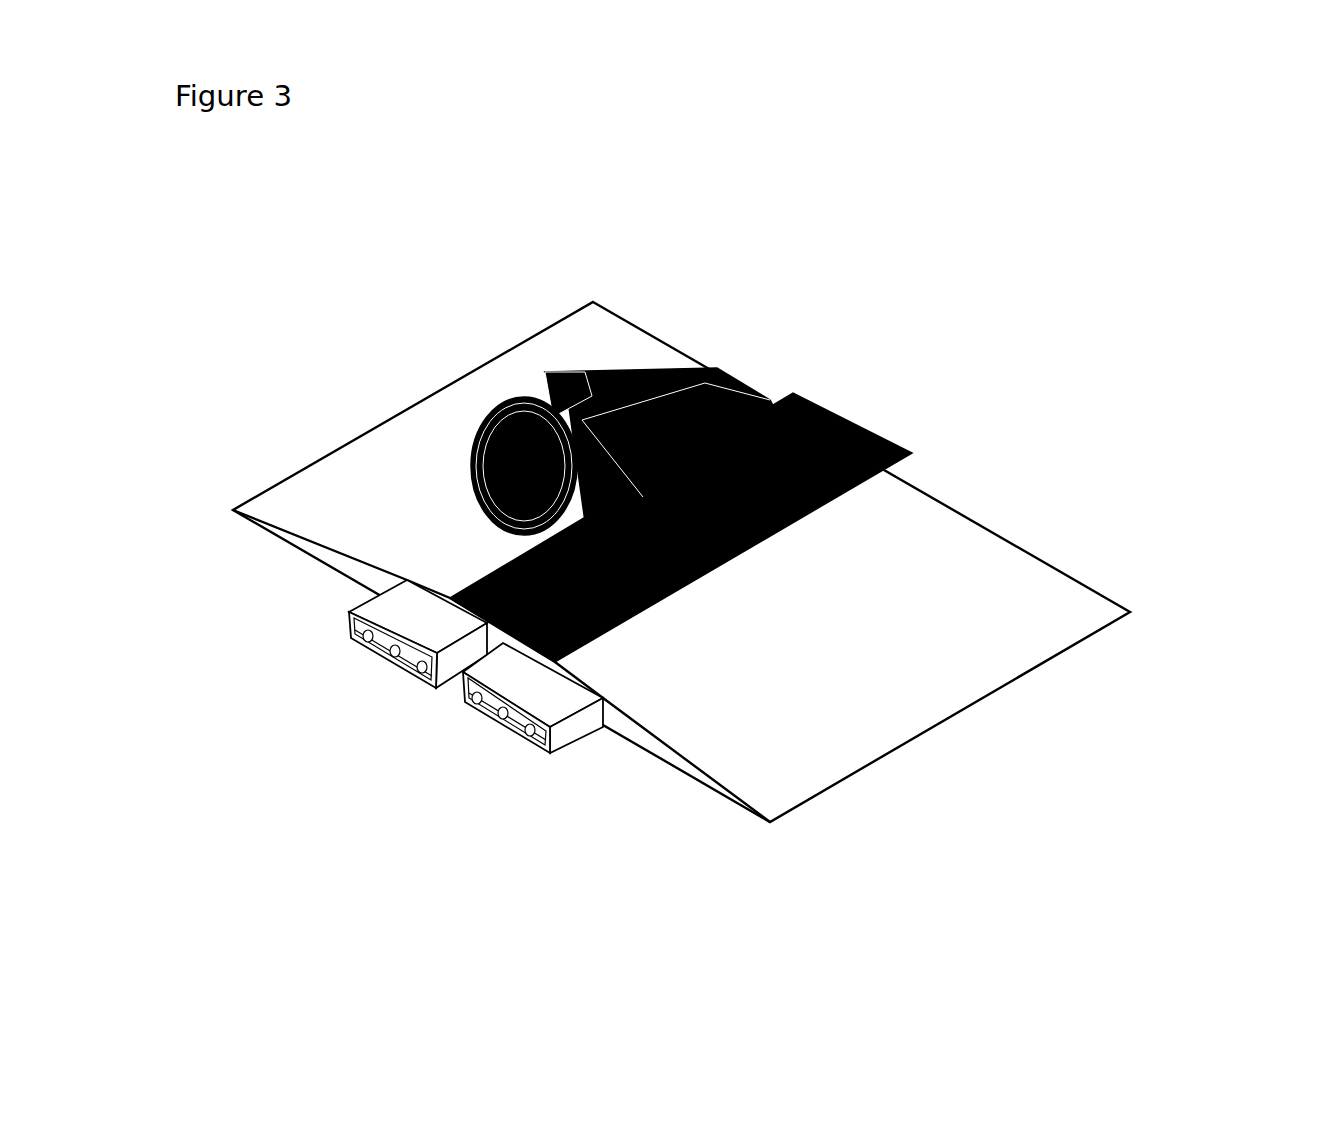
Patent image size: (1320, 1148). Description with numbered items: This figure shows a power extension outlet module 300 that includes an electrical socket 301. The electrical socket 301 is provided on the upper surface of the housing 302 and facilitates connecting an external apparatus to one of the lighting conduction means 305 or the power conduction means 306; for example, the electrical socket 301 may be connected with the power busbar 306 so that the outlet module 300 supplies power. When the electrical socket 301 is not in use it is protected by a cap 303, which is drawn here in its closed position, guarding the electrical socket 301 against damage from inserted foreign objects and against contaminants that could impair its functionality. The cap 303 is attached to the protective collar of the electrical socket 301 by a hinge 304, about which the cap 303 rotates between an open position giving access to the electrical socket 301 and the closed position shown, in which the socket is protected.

The outlet module 300 is at (372, 475).
The electrical socket 301 is at (757, 385).
The housing 302 is at (887, 437).
The cap 303 is at (523, 395).
The hinge 304 is at (593, 373).
The lighting conduction means 305 is at (393, 602).
The power conduction means 306 is at (575, 700).